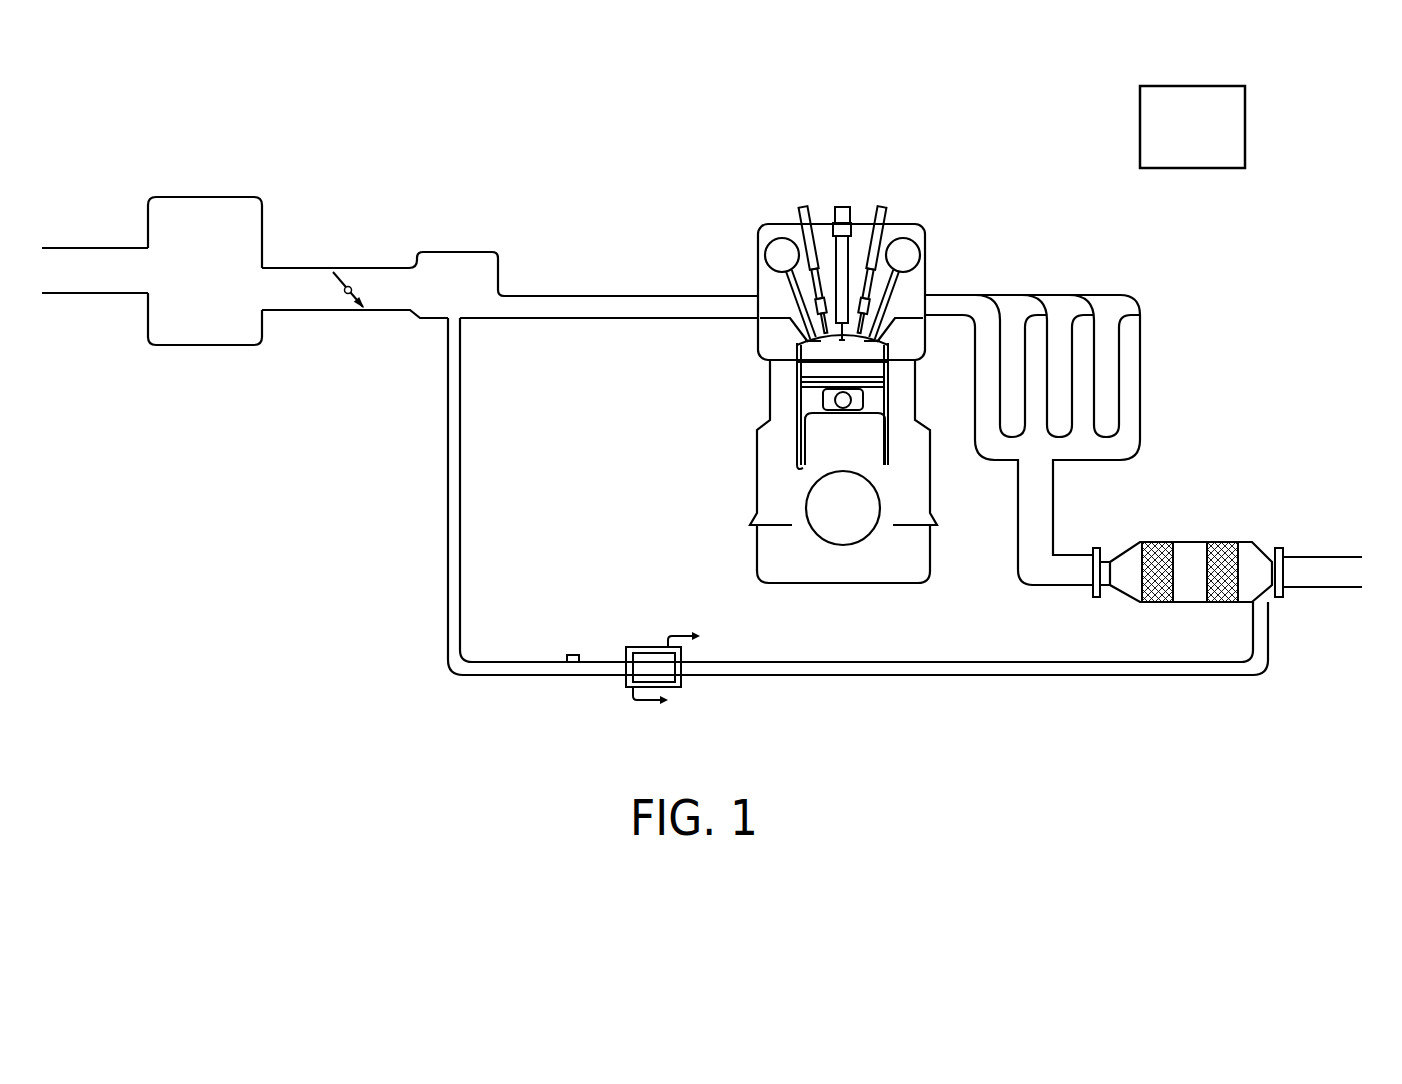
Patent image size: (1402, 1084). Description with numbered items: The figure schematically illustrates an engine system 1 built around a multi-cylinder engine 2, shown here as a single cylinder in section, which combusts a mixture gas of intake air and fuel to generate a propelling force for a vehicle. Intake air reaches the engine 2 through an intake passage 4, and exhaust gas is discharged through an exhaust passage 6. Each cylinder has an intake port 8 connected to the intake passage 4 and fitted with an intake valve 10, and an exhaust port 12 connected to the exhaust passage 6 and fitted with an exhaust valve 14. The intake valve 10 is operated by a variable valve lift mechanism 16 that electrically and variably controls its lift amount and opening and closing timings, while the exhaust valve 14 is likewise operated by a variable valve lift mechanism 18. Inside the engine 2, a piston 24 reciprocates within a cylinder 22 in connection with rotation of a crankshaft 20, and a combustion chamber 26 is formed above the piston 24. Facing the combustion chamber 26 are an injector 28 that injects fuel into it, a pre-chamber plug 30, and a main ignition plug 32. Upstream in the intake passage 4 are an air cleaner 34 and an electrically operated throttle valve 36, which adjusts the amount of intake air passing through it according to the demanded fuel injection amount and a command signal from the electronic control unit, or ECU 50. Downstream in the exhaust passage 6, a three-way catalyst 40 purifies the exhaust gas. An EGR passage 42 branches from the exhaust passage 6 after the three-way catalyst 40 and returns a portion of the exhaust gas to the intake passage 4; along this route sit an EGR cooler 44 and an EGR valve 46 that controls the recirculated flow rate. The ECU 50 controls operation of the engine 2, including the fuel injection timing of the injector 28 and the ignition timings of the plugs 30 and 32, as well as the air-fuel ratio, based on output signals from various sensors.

The engine system 1 is at (583, 162).
The engine 2 is at (865, 170).
The intake passage 4 is at (583, 296).
The exhaust passage 6 is at (1004, 296).
The intake port 8 is at (770, 300).
The intake valve 10 is at (793, 320).
The exhaust port 12 is at (912, 305).
The exhaust valve 14 is at (887, 327).
The variable valve lift mechanism 16 is at (765, 250).
The variable valve lift mechanism 18 is at (905, 225).
The crankshaft 20 is at (815, 532).
The cylinder 22 is at (795, 462).
The piston 24 is at (807, 398).
The combustion chamber 26 is at (797, 355).
The injector 28 is at (842, 205).
The pre-chamber plug 30 is at (801, 206).
The main ignition plug 32 is at (882, 206).
The air cleaner 34 is at (205, 197).
The throttle valve 36 is at (350, 268).
The three-way catalyst 40 is at (1240, 542).
The EGR passage 42 is at (1068, 675).
The EGR cooler 44 is at (675, 690).
The EGR valve 46 is at (573, 663).
The ECU 50 is at (1195, 86).